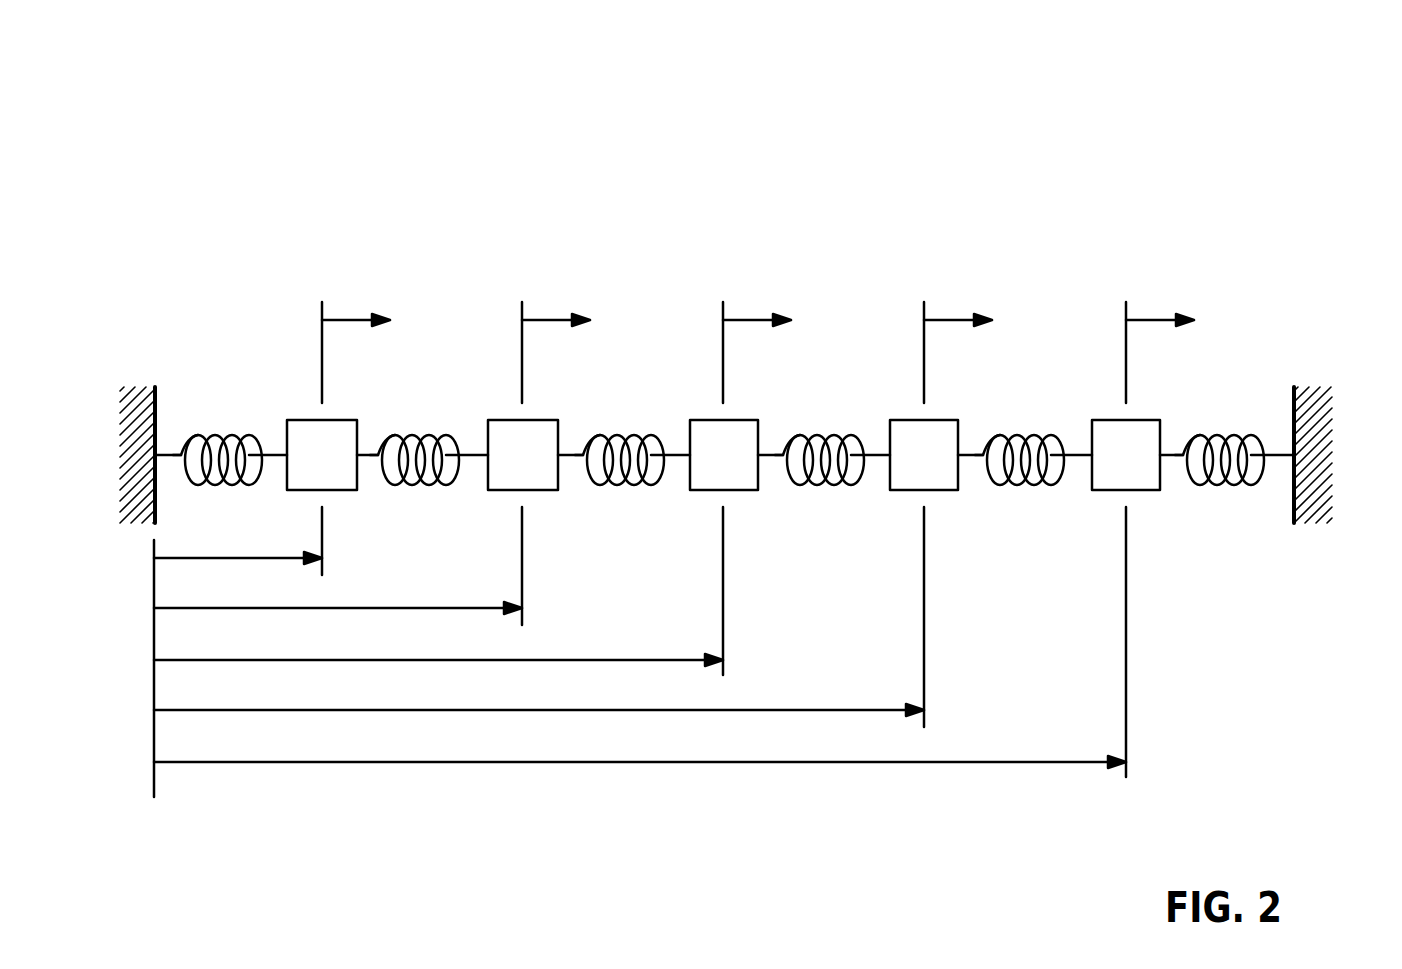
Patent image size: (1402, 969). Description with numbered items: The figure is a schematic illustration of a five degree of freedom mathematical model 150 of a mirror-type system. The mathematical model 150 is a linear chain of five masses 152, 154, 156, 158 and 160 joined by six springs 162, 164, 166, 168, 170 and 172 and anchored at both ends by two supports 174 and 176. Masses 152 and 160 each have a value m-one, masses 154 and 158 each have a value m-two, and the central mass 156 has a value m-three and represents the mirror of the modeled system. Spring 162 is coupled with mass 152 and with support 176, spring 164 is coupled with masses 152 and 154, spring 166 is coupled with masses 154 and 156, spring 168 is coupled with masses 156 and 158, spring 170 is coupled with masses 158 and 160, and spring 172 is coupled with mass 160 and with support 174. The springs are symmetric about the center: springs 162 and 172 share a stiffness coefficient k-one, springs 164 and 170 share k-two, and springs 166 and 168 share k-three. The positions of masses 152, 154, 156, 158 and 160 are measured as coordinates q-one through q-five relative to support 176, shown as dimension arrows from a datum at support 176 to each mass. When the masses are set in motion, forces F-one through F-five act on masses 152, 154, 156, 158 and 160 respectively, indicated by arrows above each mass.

The mathematical model 150 is at (690, 92).
The mass 152 is at (335, 420).
The mass 154 is at (542, 420).
The mass 156 is at (737, 420).
The mass 158 is at (940, 420).
The mass 160 is at (1145, 420).
The spring 162 is at (187, 437).
The spring 164 is at (418, 485).
The spring 166 is at (617, 483).
The spring 168 is at (813, 483).
The spring 170 is at (1015, 483).
The spring 172 is at (1217, 483).
The support 174 is at (1310, 387).
The support 176 is at (138, 387).